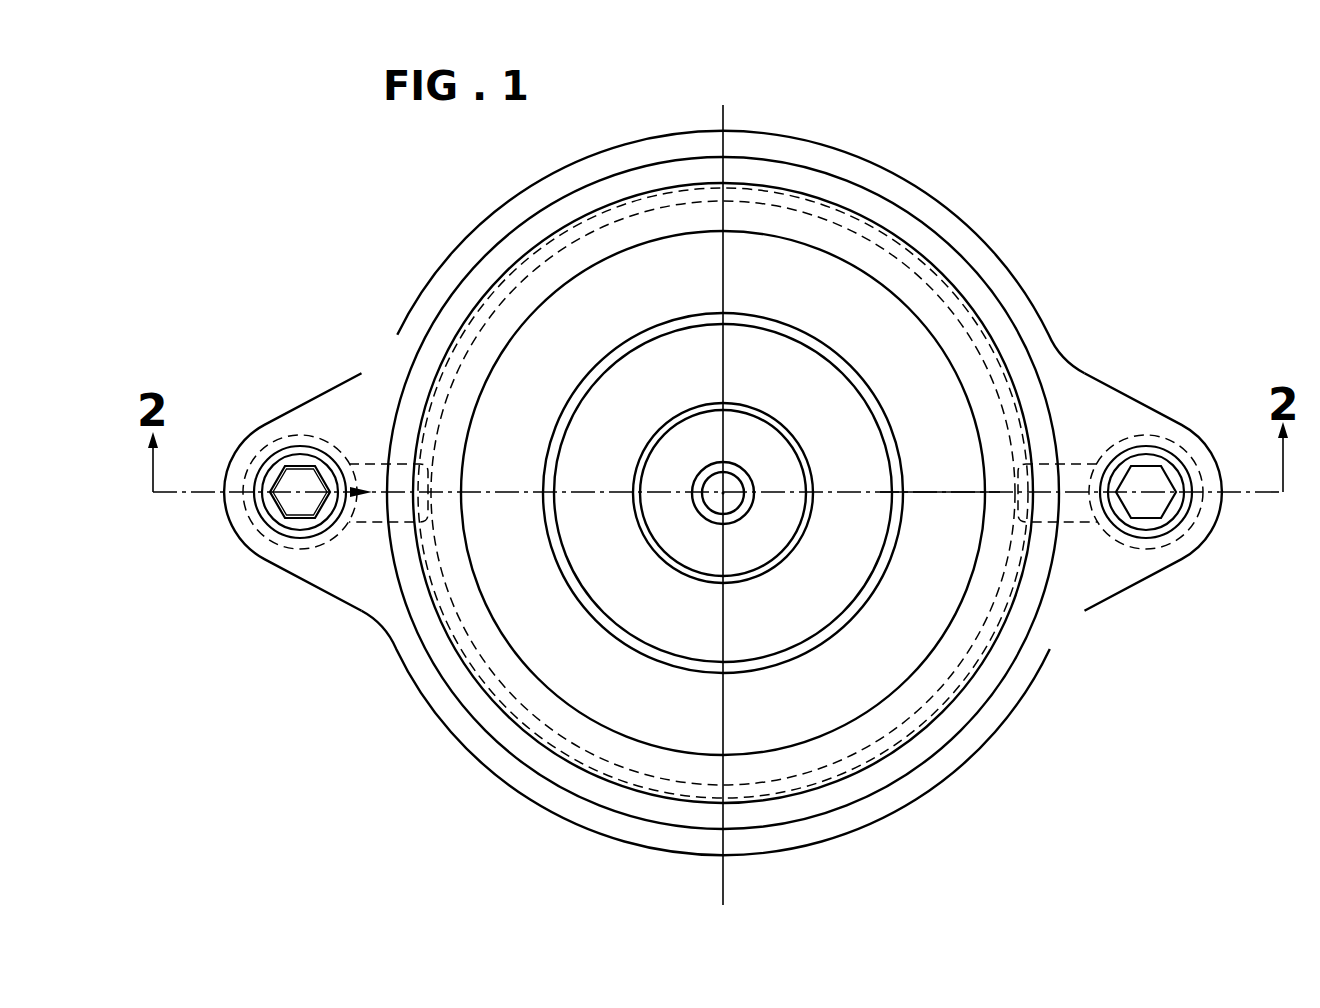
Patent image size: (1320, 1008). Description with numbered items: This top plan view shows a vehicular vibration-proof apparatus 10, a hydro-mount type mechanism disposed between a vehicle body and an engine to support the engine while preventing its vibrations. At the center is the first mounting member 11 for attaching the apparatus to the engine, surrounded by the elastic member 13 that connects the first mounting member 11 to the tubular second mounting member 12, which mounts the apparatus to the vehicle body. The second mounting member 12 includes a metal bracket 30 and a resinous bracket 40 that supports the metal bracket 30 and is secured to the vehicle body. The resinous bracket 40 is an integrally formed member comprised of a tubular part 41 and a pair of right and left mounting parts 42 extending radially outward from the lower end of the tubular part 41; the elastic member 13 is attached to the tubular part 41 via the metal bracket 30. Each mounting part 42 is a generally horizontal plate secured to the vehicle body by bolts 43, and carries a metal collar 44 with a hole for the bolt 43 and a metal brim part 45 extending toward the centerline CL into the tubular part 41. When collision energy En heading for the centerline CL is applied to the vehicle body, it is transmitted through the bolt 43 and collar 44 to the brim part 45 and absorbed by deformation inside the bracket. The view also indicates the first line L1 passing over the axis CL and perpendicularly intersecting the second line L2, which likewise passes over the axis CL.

The vehicular vibration-proof apparatus 10 is at (228, 200).
The first mounting member 11 is at (763, 443).
The second mounting member 12 is at (753, 460).
The elastic member 13 is at (851, 296).
The metal bracket 30 is at (924, 286).
The resinous bracket 40 is at (996, 303).
The tubular part 41 is at (1006, 345).
The mounting part 42 is at (316, 409).
The bolt 43 is at (283, 502).
The metal collar 44 is at (273, 530).
The brim part 45 is at (368, 524).
The first line L1 is at (726, 107).
The second line L2 is at (926, 490).
The centerline CL is at (724, 494).
The collision energy En is at (312, 496).